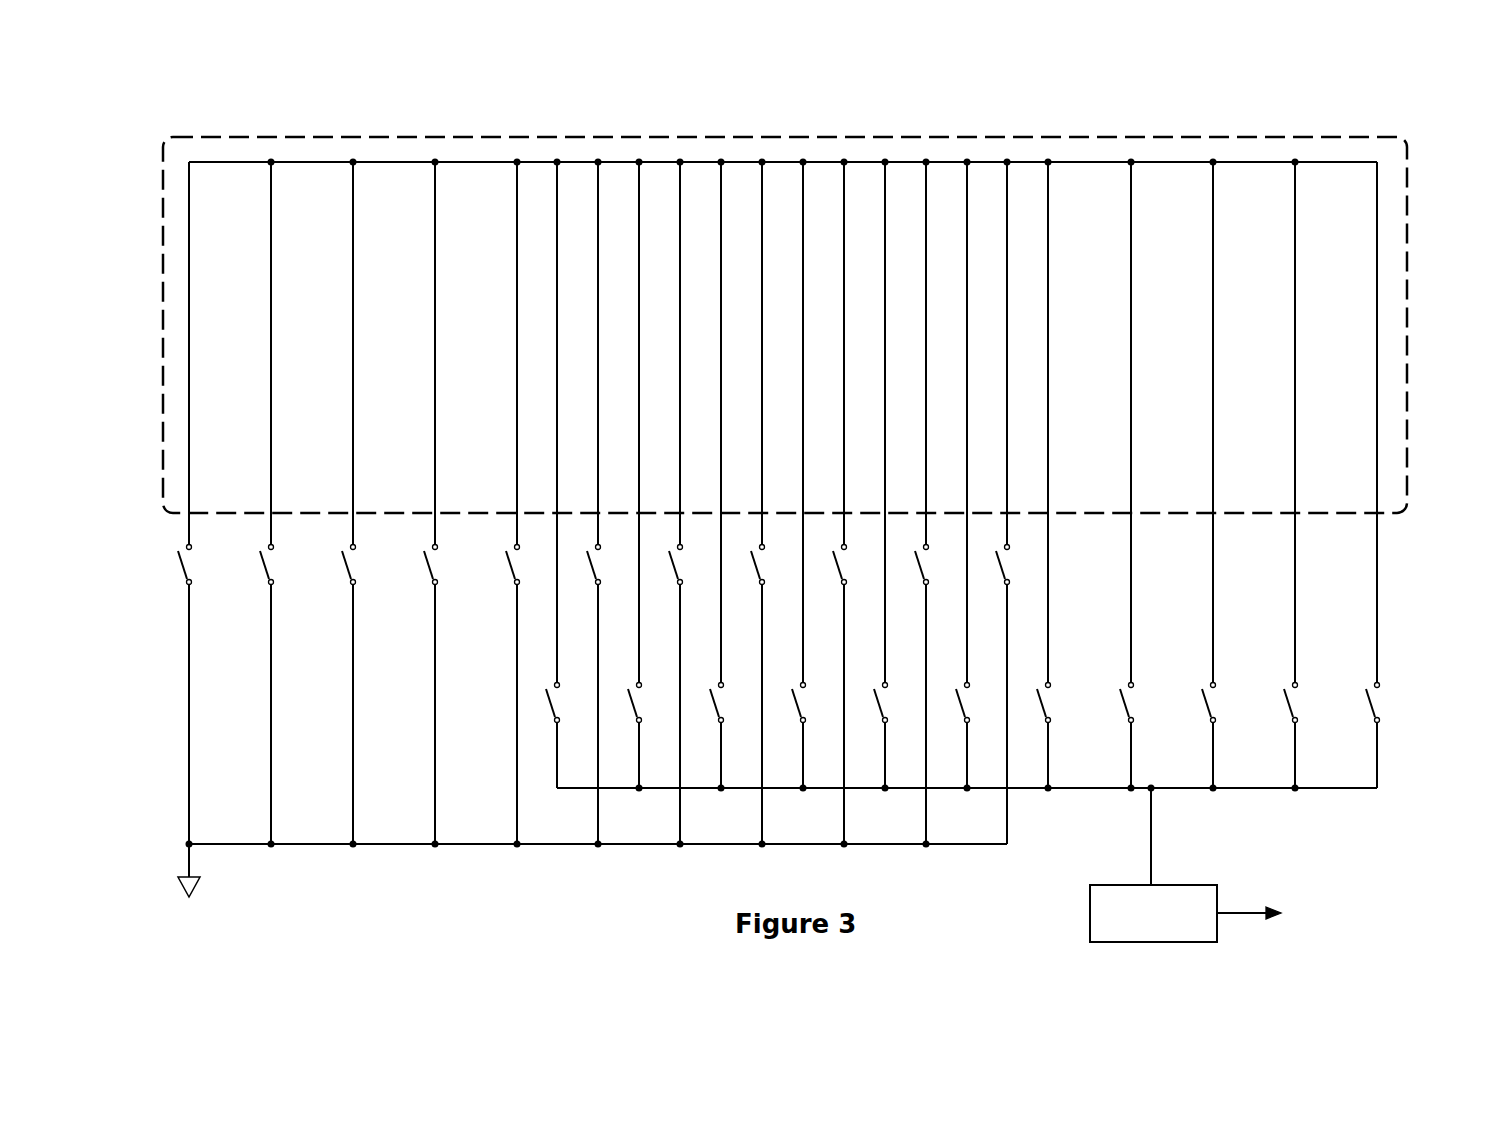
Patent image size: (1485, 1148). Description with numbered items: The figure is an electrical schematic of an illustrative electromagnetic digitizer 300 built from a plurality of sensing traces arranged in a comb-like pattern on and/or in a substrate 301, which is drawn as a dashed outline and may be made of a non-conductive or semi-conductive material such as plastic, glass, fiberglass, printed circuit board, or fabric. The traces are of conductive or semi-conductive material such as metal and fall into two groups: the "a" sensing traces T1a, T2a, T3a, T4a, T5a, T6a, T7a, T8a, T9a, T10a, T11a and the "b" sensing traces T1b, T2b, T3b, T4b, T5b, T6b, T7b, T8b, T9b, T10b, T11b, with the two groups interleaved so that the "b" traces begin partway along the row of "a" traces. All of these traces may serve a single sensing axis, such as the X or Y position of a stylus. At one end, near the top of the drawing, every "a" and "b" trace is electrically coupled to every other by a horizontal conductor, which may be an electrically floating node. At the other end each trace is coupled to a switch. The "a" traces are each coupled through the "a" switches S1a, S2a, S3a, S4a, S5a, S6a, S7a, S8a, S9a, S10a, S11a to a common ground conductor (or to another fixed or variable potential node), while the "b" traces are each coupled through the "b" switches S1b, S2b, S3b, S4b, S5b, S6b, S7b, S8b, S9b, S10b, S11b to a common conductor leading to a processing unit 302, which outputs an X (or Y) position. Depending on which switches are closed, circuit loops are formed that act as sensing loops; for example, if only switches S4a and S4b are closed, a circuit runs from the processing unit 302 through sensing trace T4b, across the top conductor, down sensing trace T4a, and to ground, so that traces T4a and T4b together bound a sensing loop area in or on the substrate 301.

The electromagnetic digitizer 300 is at (872, 98).
The substrate 301 is at (1082, 137).
The processing unit 302 is at (1138, 933).
The sensing trace T1a is at (204, 353).
The sensing trace T2a is at (286, 353).
The sensing trace T3a is at (368, 353).
The sensing trace T4a is at (450, 353).
The sensing trace T5a is at (532, 353).
The sensing trace T6a is at (613, 353).
The sensing trace T7a is at (695, 353).
The sensing trace T8a is at (777, 353).
The sensing trace T9a is at (859, 353).
The sensing trace T10a is at (945, 353).
The sensing trace T11a is at (1026, 353).
The sensing trace T1b is at (572, 422).
The sensing trace T2b is at (654, 422).
The sensing trace T3b is at (736, 422).
The sensing trace T4b is at (818, 422).
The sensing trace T5b is at (900, 422).
The sensing trace T6b is at (982, 422).
The sensing trace T7b is at (1063, 422).
The sensing trace T8b is at (1146, 422).
The sensing trace T9b is at (1228, 422).
The sensing trace T10b is at (1314, 422).
The sensing trace T11b is at (1358, 422).
The switch S1a is at (199, 695).
The switch S2a is at (281, 695).
The switch S3a is at (363, 695).
The switch S4a is at (445, 695).
The switch S5a is at (527, 695).
The switch S6a is at (608, 695).
The switch S7a is at (690, 695).
The switch S8a is at (772, 695).
The switch S9a is at (854, 695).
The switch S10a is at (940, 695).
The switch S11a is at (1021, 695).
The switch S1b is at (567, 736).
The switch S2b is at (649, 736).
The switch S3b is at (731, 736).
The switch S4b is at (813, 736).
The switch S5b is at (895, 736).
The switch S6b is at (977, 736).
The switch S7b is at (1058, 736).
The switch S8b is at (1141, 736).
The switch S9b is at (1223, 736).
The switch S10b is at (1310, 736).
The switch S11b is at (1358, 725).